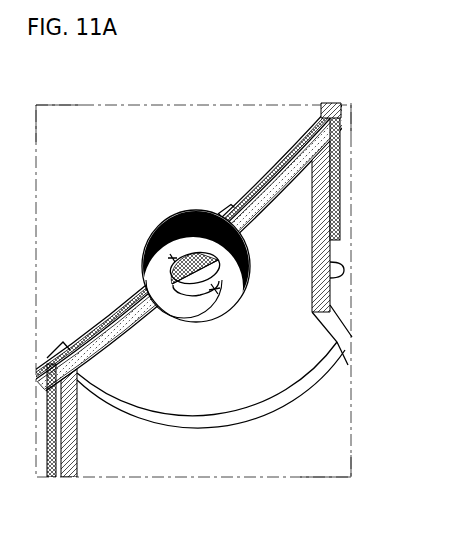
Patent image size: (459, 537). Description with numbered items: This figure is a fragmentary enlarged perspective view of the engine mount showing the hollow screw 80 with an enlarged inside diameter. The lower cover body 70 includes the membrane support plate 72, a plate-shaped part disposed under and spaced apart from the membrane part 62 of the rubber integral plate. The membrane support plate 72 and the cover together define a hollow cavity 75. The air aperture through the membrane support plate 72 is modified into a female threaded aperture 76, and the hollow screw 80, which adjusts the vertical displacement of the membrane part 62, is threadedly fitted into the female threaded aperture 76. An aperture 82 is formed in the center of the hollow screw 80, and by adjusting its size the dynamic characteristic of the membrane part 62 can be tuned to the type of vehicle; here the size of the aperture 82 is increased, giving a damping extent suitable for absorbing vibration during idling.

The membrane part 62 is at (101, 326).
The cover body 70 is at (347, 257).
The membrane support plate 72 is at (117, 322).
The hollow cavity 75 is at (285, 437).
The female threaded aperture 76 is at (220, 240).
The hollow screw 80 is at (206, 362).
The aperture 82 is at (201, 292).